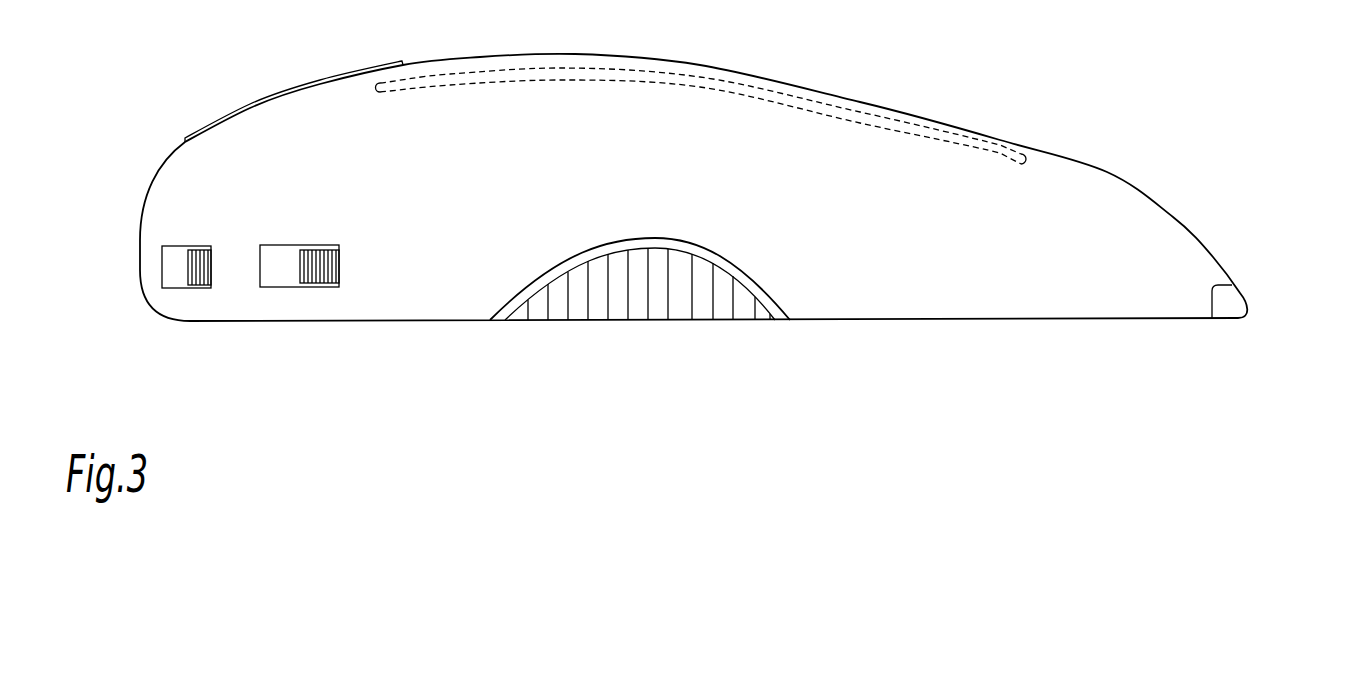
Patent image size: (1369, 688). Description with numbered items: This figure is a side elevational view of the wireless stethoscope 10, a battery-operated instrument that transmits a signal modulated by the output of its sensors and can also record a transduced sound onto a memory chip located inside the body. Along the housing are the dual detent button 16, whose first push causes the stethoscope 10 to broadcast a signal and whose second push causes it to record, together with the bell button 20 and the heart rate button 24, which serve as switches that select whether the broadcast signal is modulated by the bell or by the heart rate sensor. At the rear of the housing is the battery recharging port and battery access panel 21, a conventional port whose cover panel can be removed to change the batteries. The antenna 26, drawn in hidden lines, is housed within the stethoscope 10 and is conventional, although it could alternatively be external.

The stethoscope 10 is at (1203, 168).
The dual detent button 16 is at (630, 302).
The bell button 20 is at (285, 288).
The battery recharging port/battery access panel 21 is at (1228, 302).
The heart rate button 24 is at (162, 268).
The antenna 26 is at (915, 126).